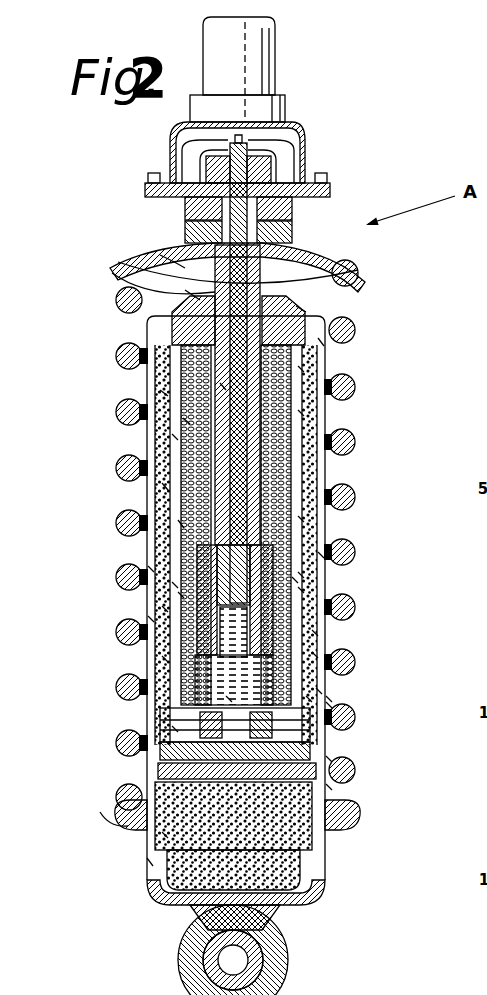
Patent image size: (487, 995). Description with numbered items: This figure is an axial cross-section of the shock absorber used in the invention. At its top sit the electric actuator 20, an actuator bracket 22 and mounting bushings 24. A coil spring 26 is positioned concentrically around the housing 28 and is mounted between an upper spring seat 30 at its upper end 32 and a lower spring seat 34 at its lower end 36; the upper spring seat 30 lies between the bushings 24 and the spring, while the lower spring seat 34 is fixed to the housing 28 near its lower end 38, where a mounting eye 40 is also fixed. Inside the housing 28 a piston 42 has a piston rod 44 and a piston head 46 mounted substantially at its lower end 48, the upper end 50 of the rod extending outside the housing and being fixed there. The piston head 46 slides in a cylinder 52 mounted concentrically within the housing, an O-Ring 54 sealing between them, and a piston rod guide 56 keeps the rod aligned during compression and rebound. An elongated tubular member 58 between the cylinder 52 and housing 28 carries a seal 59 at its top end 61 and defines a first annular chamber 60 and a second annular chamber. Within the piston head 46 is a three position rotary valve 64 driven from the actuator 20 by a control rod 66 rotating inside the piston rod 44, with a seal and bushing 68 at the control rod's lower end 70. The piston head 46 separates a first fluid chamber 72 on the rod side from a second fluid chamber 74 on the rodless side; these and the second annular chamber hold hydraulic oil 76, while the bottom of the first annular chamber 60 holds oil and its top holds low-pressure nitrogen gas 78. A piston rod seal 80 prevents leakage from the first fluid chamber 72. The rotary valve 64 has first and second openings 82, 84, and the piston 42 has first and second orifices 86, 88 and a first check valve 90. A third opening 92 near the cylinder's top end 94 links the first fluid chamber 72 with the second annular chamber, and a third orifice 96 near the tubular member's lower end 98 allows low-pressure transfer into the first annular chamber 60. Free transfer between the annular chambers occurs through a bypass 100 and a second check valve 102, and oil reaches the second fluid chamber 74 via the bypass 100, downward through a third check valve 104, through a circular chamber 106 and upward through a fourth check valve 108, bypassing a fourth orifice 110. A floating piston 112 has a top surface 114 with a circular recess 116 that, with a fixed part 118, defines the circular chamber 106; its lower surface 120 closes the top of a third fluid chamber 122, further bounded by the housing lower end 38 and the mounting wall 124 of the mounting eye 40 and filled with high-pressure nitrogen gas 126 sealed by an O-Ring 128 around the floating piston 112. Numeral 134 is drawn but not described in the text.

The electric actuator 20 is at (285, 113).
The actuator bracket 22 is at (322, 188).
The mounting bushings 24 is at (185, 230).
The coil spring 26 is at (116, 300).
The housing 28 is at (165, 326).
The upper spring seat 30 is at (332, 252).
The upper end 32 is at (357, 283).
The lower spring seat 34 is at (115, 818).
The lower end 36 is at (122, 800).
The lower end 38 is at (147, 862).
The mounting eye 40 is at (180, 955).
The piston 42 is at (328, 540).
The piston rod 44 is at (300, 458).
The piston head 46 is at (165, 610).
The lower end 48 is at (150, 620).
The upper end 50 is at (212, 166).
The cylinder 52 is at (295, 480).
The O-Ring 54 is at (300, 590).
The piston rod guide 56 is at (322, 344).
The elongated tubular member 58 is at (165, 487).
The seal 59 is at (160, 258).
The first elongated annular fluid chamber 60 is at (165, 393).
The top end 61 is at (190, 300).
The three position rotary valve 64 is at (150, 570).
The control rod 66 is at (222, 386).
The seal and bushing 68 is at (300, 520).
The lower end 70 is at (215, 555).
The first fluid chamber 72 is at (175, 437).
The second fluid chamber 74 is at (215, 640).
The hydraulic oil 76 is at (315, 655).
The low-pressure nitrogen gas 78 is at (300, 370).
The piston rod seal 80 is at (300, 310).
The first opening 82 is at (180, 525).
The second opening 84 is at (175, 585).
The first orifice 86 is at (295, 580).
The second orifice 88 is at (320, 555).
The first check valve 90 is at (300, 575).
The third opening 92 is at (185, 420).
The top end 94 is at (262, 422).
The third orifice 96 is at (330, 700).
The lower end 98 is at (320, 692).
The bypass 100 is at (310, 700).
The second check valve 102 is at (330, 705).
The third check valve 104 is at (230, 700).
The circular chamber 106 is at (330, 788).
The fourth check valve 108 is at (320, 738).
The fourth orifice 110 is at (165, 660).
The floating piston 112 is at (165, 758).
The top surface 114 is at (175, 730).
The circular recess 116 is at (318, 840).
The fixed part 118 is at (320, 752).
The lower surface 120 is at (165, 835).
The third fluid chamber 122 is at (225, 860).
The mounting wall 124 is at (175, 890).
The high-pressure nitrogen gas 126 is at (230, 845).
The O-Ring 128 is at (160, 768).
The retaining ring 134 is at (330, 760).